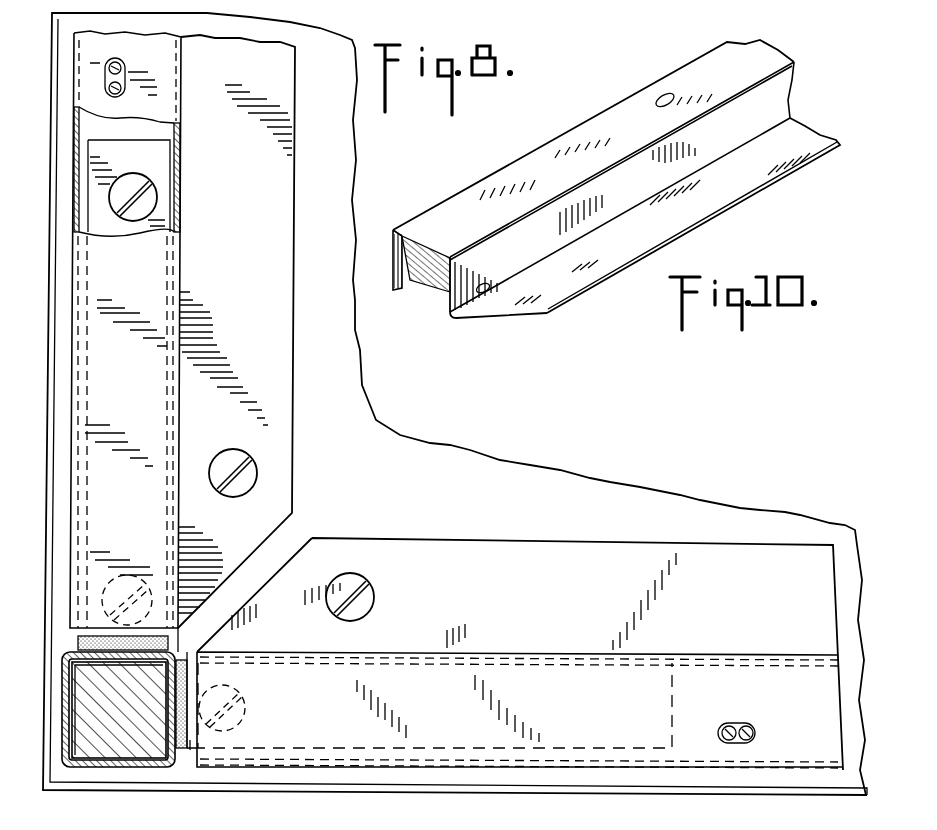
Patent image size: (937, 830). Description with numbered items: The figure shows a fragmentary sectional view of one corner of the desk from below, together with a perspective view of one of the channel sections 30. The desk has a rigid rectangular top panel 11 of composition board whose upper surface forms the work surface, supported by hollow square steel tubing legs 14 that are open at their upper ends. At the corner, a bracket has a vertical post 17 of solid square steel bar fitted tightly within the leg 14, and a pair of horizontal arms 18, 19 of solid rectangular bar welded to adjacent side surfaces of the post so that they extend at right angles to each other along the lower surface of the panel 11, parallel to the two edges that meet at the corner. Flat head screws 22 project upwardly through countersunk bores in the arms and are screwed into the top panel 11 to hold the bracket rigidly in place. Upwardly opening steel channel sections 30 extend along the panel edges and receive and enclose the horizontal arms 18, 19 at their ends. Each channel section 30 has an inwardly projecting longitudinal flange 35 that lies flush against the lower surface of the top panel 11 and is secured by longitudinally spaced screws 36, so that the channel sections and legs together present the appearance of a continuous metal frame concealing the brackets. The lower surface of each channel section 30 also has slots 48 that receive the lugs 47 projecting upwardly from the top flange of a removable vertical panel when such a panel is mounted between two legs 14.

In FIG. 8, the top panel 11 is at (56, 396).
In FIG. 8, the leg 14 is at (63, 723).
In FIG. 8, the vertical post 17 is at (82, 688).
In FIG. 8, the horizontal arm 18 is at (78, 629).
In FIG. 8, the horizontal arm 19 is at (190, 738).
In FIG. 8, the flat head screw 22 is at (110, 199).
In FIG. 10, the channel section 30 is at (579, 118).
In FIG. 8, the longitudinal flange 35 is at (274, 294).
In FIG. 10, the longitudinal flange 35 is at (605, 277).
In FIG. 8, the screw 36 is at (249, 474).
In FIG. 8, the lug 47 is at (738, 745).
In FIG. 8, the slot 48 is at (733, 723).
In FIG. 10, the slot 48 is at (661, 95).